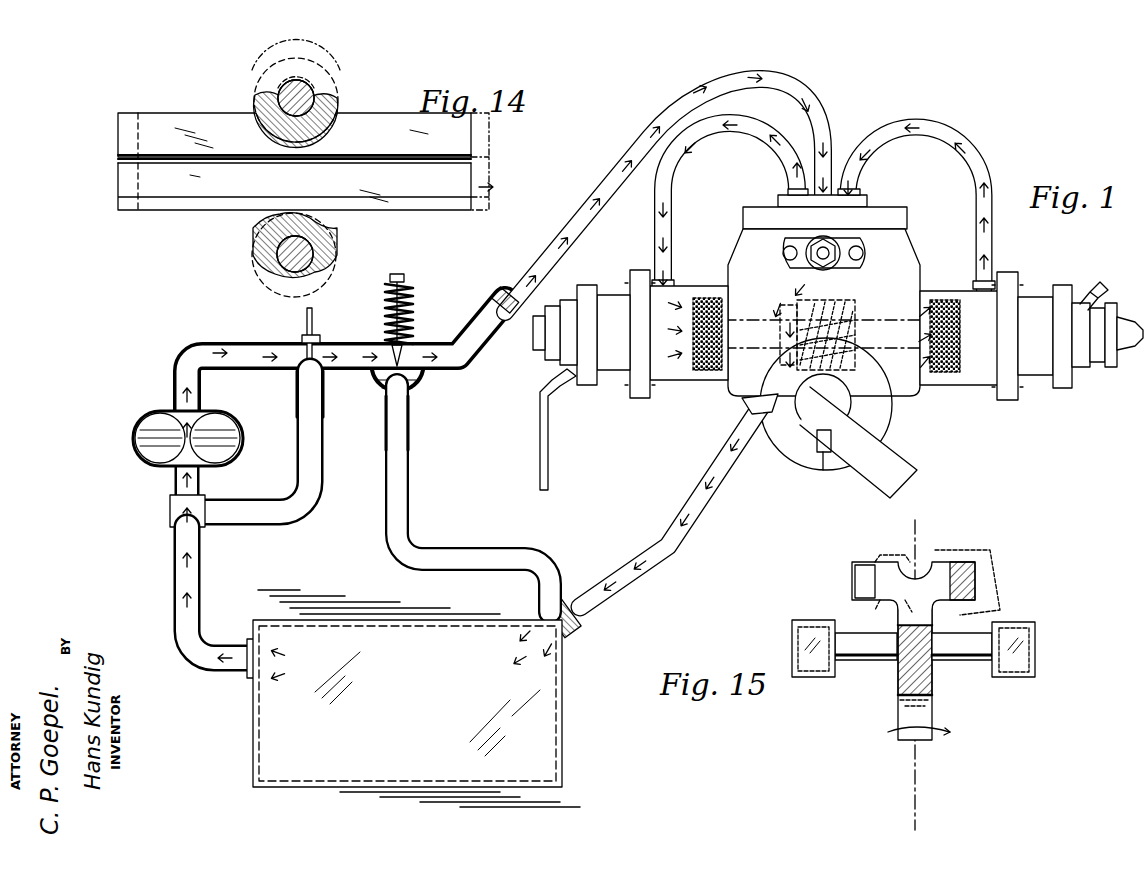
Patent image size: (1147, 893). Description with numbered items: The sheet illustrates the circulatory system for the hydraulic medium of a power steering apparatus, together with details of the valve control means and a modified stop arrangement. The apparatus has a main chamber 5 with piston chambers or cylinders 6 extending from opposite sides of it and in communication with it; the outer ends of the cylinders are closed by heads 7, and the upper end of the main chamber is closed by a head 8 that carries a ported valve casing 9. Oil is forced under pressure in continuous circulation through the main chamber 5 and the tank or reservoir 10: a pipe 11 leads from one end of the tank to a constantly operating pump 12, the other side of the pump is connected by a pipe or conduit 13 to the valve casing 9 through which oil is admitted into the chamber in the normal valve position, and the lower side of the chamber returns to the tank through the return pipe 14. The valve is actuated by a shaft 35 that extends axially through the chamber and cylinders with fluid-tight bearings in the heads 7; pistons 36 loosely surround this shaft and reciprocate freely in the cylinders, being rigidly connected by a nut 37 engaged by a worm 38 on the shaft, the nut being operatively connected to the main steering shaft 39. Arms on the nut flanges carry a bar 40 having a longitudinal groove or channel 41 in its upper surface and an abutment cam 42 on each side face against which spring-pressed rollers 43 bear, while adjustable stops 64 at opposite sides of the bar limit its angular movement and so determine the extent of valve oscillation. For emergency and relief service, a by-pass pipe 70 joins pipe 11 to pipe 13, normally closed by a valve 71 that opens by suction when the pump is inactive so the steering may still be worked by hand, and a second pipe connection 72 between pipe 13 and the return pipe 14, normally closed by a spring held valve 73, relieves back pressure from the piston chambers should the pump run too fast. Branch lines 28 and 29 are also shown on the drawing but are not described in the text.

In FIG. 1, the main chamber 5 is at (890, 395).
In FIG. 1, the piston chambers or cylinders 6 is at (675, 378).
In FIG. 1, the heads 7 is at (622, 387).
In FIG. 1, the head 8 is at (890, 215).
In FIG. 1, the ported valve casing 9 is at (822, 200).
In FIG. 1, the tank or reservoir 10 is at (318, 610).
In FIG. 1, the pipe 11 is at (195, 598).
In FIG. 1, the pump 12 is at (160, 416).
In FIG. 1, the pipe or conduit 13 is at (493, 300).
In FIG. 1, the return pipe 14 is at (682, 548).
In FIG. 1, the branch pipe 28 is at (710, 128).
In FIG. 1, the branch pipe 29 is at (965, 150).
In FIG. 1, the shaft 35 is at (1128, 340).
In FIG. 1, the pistons 36 is at (706, 374).
In FIG. 1, the nut 37 is at (845, 300).
In FIG. 1, the worm 38 is at (858, 355).
In FIG. 1, the main steering shaft 39 is at (782, 400).
In FIG. 14, the bar 40 is at (175, 110).
In FIG. 15, the bar 40 is at (903, 690).
In FIG. 14, the longitudinal groove or channel 41 is at (158, 192).
In FIG. 15, the longitudinal groove or channel 41 is at (930, 575).
In FIG. 14, the abutment cam 42 is at (272, 108).
In FIG. 15, the abutment cam 42 is at (908, 570).
In FIG. 14, the rollers 43 is at (330, 112).
In FIG. 15, the adjustable stops 64 is at (840, 640).
In FIG. 1, the by-pass pipe 70 is at (300, 435).
In FIG. 1, the valve 71 is at (306, 327).
In FIG. 1, the second pipe connection 72 is at (410, 495).
In FIG. 1, the spring held valve 73 is at (410, 355).